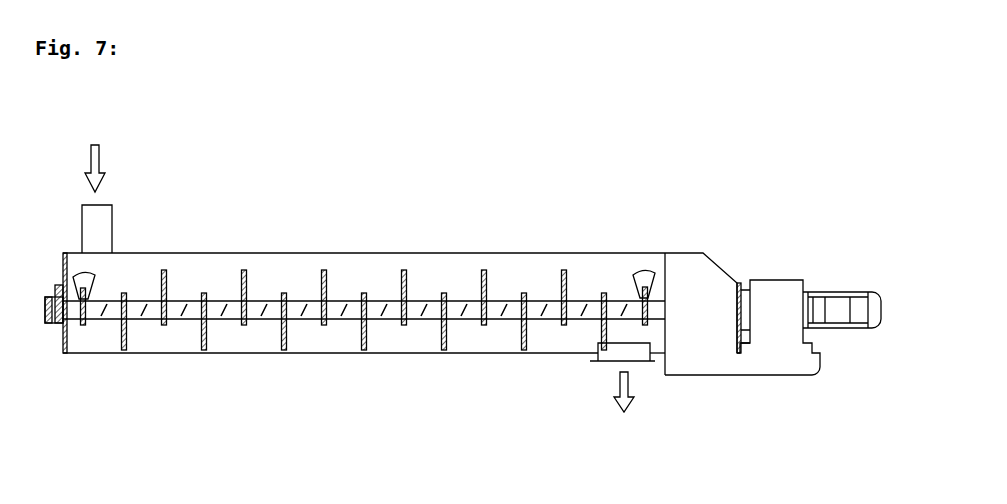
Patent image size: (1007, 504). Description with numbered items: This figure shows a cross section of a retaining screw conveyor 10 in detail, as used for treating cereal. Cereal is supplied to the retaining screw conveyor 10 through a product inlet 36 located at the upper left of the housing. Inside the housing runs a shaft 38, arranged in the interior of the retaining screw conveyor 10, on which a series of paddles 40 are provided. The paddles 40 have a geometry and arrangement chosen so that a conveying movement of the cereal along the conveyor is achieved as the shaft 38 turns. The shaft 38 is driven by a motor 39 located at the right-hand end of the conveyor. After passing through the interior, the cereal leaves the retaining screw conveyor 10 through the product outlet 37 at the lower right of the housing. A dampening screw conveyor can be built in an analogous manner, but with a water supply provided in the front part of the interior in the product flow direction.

The retaining screw conveyor 10 is at (502, 143).
The product inlet 36 is at (112, 219).
The product outlet 37 is at (608, 362).
The shaft 38 is at (177, 320).
The motor 39 is at (832, 292).
The paddles 40 is at (322, 280).